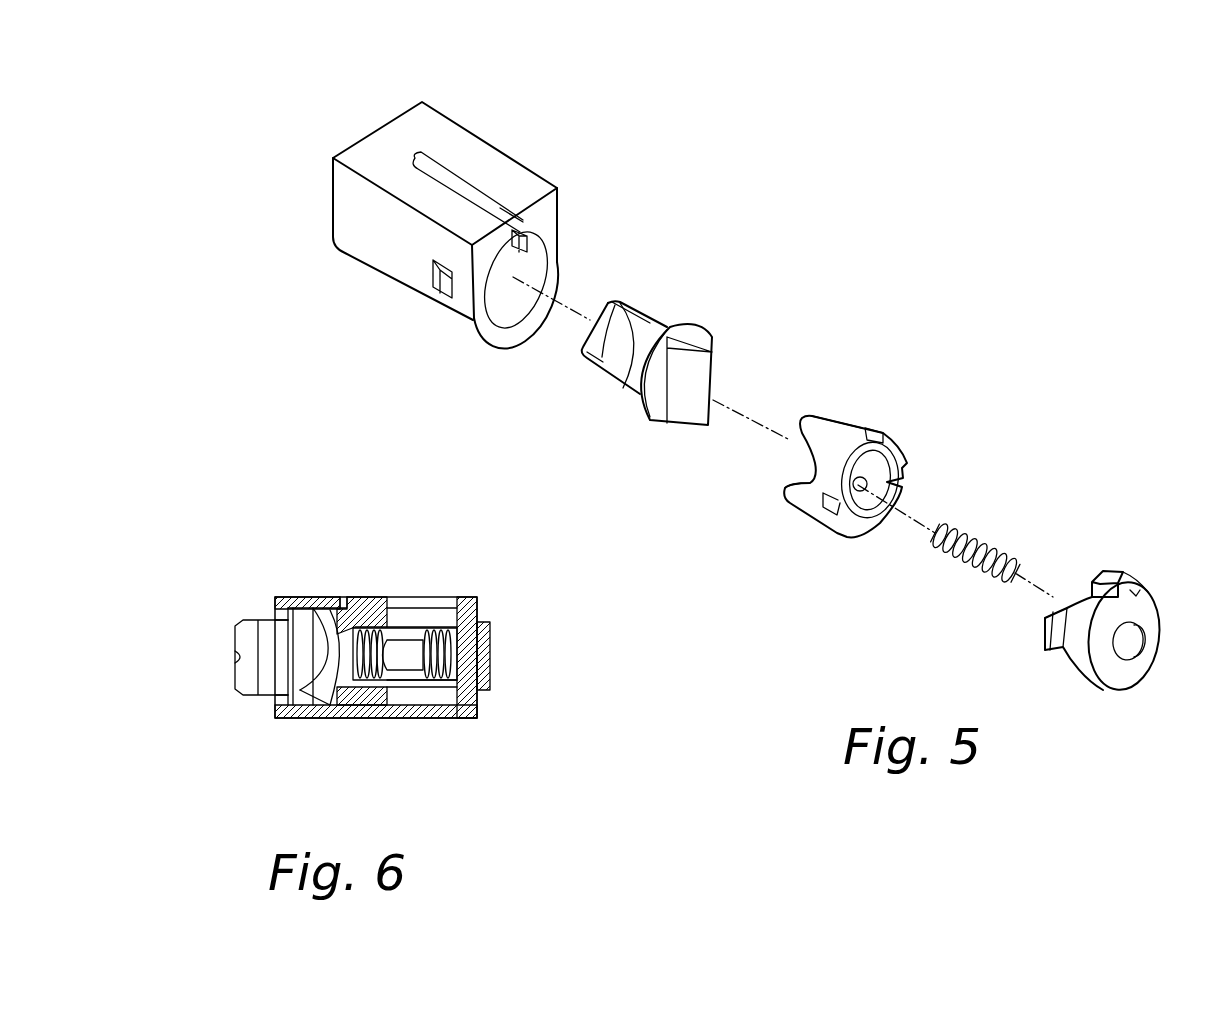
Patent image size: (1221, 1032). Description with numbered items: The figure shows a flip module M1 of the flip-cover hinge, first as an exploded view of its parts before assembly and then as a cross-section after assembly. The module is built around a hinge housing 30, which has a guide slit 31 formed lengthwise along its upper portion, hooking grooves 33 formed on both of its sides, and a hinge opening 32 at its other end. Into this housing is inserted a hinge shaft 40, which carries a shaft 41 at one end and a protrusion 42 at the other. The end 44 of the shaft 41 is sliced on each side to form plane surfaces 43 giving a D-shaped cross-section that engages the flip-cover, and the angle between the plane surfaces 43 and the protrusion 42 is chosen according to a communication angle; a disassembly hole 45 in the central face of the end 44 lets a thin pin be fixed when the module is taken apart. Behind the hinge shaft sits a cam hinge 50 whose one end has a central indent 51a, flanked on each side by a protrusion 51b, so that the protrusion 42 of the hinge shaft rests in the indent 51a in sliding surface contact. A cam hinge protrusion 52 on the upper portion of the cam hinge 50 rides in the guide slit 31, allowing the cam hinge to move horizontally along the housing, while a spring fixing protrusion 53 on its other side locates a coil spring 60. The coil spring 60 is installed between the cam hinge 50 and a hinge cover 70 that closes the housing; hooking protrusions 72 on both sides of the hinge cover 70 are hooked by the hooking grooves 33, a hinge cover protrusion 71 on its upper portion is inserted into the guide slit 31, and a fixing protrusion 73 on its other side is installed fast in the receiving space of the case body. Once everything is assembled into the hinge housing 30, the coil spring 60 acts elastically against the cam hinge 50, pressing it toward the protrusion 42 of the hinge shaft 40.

In FIG. 5, the hinge housing 30 is at (475, 116).
In FIG. 6, the hinge housing 30 is at (292, 602).
In FIG. 5, the guide slit 31 is at (514, 232).
In FIG. 6, the hinge opening 32 is at (270, 618).
In FIG. 5, the hooking grooves 33 is at (436, 289).
In FIG. 5, the hinge shaft 40 is at (621, 346).
In FIG. 5, the shaft 41 is at (622, 372).
In FIG. 6, the shaft 41 is at (260, 686).
In FIG. 5, the protrusion 42 is at (703, 382).
In FIG. 6, the protrusion 42 is at (312, 633).
In FIG. 5, the plane surface 43 is at (587, 333).
In FIG. 5, the end 44 is at (622, 308).
In FIG. 6, the disassembly hole 45 is at (236, 657).
In FIG. 5, the cam hinge 50 is at (858, 402).
In FIG. 5, the indent 51a is at (783, 483).
In FIG. 5, the protrusion 51b is at (823, 428).
In FIG. 6, the protrusion 51b is at (320, 686).
In FIG. 5, the cam hinge protrusion 52 is at (878, 432).
In FIG. 6, the cam hinge protrusion 52 is at (370, 606).
In FIG. 5, the spring fixing protrusion 53 is at (858, 487).
In FIG. 6, the spring fixing protrusion 53 is at (390, 678).
In FIG. 5, the coil spring 60 is at (992, 532).
In FIG. 5, the hinge cover 70 is at (1133, 596).
In FIG. 5, the hinge cover protrusion 71 is at (1113, 572).
In FIG. 6, the hinge cover protrusion 71 is at (467, 602).
In FIG. 5, the hooking protrusion 72 is at (1053, 610).
In FIG. 5, the fixing protrusion 73 is at (1133, 648).
In FIG. 6, the fixing protrusion 73 is at (490, 652).
In FIG. 6, the flip module M1 is at (250, 602).